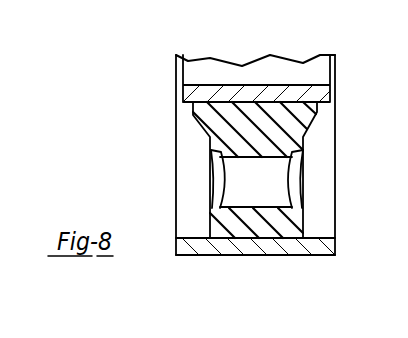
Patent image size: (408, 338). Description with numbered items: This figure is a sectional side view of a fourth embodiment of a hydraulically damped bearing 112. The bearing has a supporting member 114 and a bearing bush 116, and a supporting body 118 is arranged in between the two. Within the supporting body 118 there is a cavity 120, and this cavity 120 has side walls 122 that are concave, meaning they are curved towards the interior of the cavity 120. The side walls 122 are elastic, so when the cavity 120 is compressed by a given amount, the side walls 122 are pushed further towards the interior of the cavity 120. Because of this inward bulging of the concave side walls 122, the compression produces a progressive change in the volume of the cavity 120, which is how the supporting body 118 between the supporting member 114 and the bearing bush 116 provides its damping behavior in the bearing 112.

The hydraulically damped bearing 112 is at (125, 88).
The supporting member 114 is at (263, 247).
The bearing bush 116 is at (317, 98).
The supporting body 118 is at (306, 128).
The cavity 120 is at (277, 178).
The side wall 122 is at (218, 188).